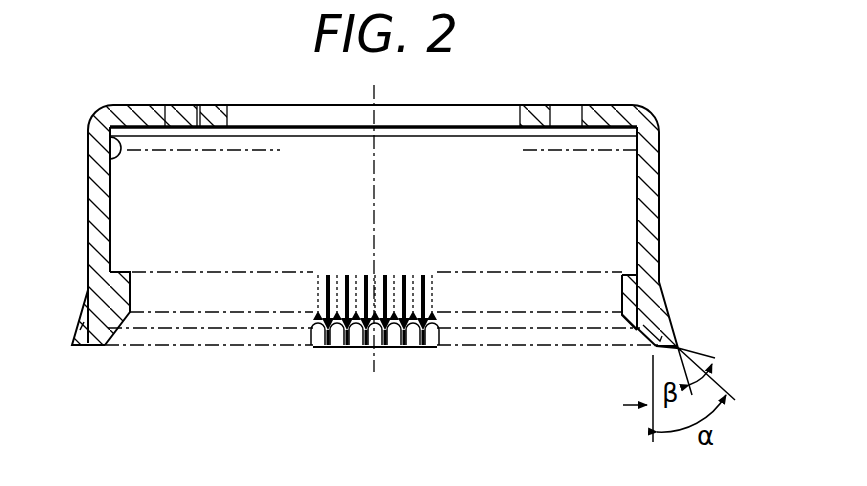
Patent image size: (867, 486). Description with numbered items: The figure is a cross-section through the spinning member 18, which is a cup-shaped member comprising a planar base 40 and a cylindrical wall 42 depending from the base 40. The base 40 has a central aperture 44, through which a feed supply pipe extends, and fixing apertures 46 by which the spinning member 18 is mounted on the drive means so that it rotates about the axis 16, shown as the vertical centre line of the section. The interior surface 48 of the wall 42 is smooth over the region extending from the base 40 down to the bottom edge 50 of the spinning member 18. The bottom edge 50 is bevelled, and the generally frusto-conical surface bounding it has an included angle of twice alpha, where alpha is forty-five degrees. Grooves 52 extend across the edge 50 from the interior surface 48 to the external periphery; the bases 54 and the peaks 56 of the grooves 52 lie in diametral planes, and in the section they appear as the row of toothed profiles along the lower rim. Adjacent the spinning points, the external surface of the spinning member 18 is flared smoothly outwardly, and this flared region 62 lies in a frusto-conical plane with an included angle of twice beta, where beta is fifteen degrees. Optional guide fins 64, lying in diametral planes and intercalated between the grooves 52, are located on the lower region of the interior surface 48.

The axis 16 is at (372, 163).
The spinning member 18 is at (668, 99).
The planar base 40 is at (528, 111).
The cylindrical wall 42 is at (650, 220).
The central aperture 44 is at (247, 106).
The fixing apertures 46 is at (189, 106).
The interior surface 48 is at (112, 113).
The bottom edge 50 is at (103, 346).
The grooves 52 is at (680, 330).
The bases of the grooves 54 is at (437, 366).
The peaks of the grooves 56 is at (322, 348).
The flared region 62 is at (88, 300).
The guide fins 64 is at (130, 277).